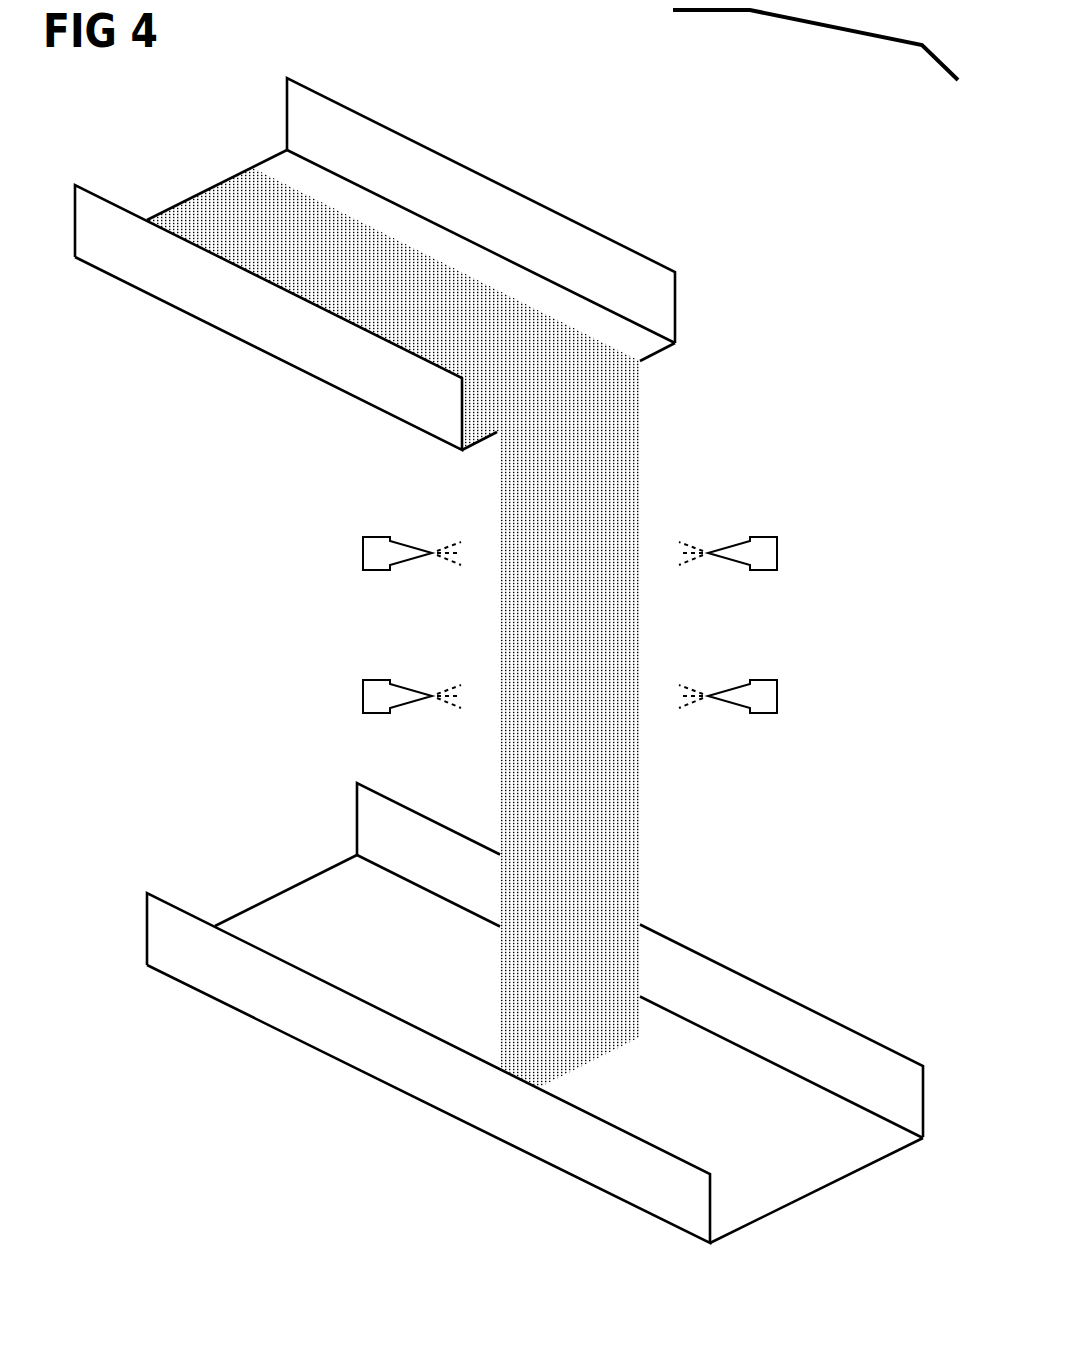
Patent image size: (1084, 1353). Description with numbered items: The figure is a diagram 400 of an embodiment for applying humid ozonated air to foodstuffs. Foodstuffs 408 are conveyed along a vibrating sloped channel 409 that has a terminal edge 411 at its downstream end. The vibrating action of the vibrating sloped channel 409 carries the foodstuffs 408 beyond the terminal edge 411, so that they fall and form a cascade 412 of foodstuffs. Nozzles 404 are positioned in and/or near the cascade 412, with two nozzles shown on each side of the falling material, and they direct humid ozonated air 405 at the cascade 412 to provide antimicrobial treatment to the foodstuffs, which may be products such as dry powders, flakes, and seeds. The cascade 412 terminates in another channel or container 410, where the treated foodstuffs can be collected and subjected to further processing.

The diagram 400 is at (815, 45).
The nozzles 404 is at (569, 640).
The humid ozonated air 405 is at (569, 642).
The foodstuffs 408 is at (207, 215).
The vibrating sloped channel 409 is at (620, 244).
The channel or container 410 is at (620, 1202).
The terminal edge 411 is at (641, 362).
The cascade 412 is at (612, 447).